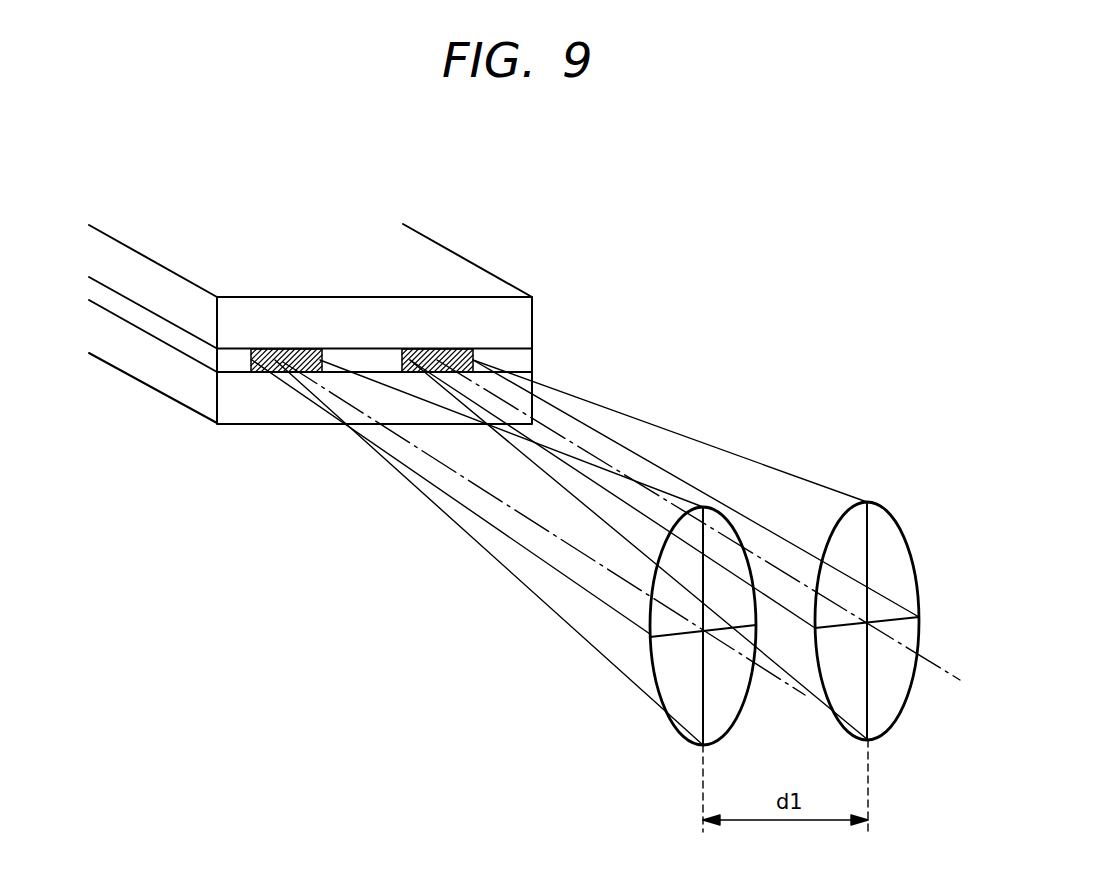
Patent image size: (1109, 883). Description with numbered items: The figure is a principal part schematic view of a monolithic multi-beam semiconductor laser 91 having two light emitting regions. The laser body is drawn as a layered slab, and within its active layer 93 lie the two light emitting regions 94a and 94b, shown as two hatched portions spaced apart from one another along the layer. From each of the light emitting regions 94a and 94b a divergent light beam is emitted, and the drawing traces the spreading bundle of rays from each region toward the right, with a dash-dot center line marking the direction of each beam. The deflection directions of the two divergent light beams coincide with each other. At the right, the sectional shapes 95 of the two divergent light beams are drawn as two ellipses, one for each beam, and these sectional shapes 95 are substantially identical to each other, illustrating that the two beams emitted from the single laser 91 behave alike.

The multi-beam semiconductor laser 91 is at (462, 257).
The active layer 93 is at (190, 347).
The light emitting region 94a is at (528, 532).
The light emitting region 94b is at (681, 529).
The sectional shape of divergent light beam 95 is at (886, 535).